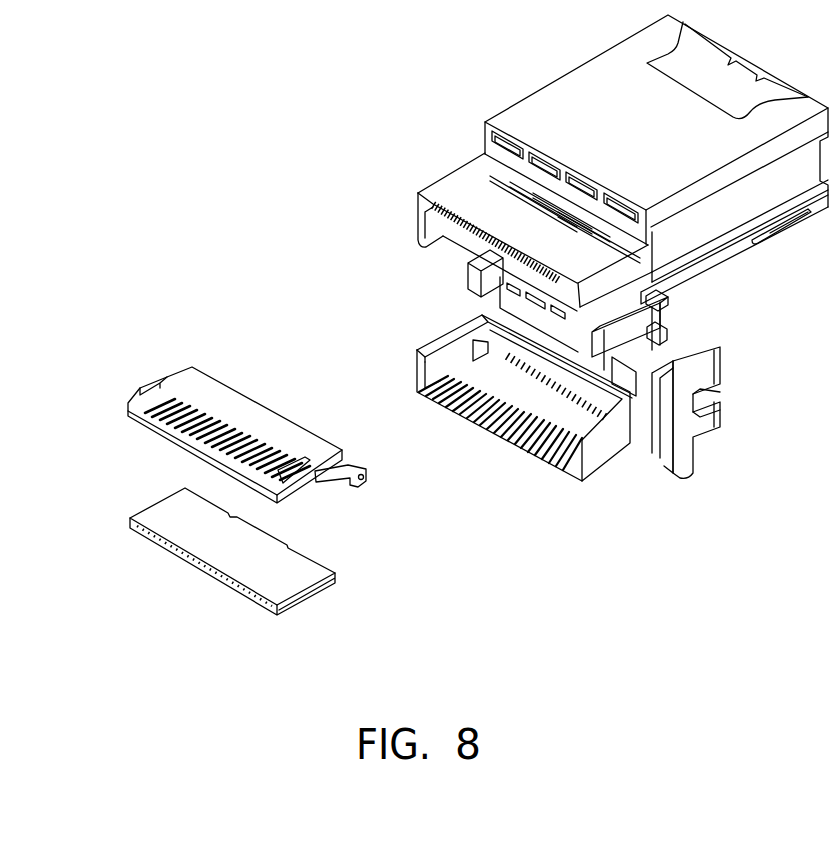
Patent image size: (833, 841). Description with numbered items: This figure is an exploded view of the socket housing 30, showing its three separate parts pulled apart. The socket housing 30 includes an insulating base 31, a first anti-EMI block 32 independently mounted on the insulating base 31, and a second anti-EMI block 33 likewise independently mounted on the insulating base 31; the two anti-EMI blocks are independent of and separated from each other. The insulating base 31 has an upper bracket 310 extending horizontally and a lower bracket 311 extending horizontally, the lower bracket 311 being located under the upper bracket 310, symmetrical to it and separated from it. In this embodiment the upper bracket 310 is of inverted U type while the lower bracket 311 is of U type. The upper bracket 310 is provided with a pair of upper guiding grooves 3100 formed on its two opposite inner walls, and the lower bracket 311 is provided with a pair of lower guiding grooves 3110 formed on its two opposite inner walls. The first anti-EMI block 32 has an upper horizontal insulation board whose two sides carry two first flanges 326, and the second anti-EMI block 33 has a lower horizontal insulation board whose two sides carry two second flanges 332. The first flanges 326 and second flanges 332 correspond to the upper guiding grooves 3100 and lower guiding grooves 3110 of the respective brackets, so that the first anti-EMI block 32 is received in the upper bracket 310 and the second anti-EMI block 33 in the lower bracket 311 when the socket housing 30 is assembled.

The socket housing 30 is at (244, 101).
The insulating base 31 is at (565, 74).
The upper bracket 310 is at (458, 188).
The upper guiding grooves 3100 is at (420, 237).
The lower bracket 311 is at (430, 337).
The lower guiding grooves 3110 is at (418, 359).
The first anti-EMI block 32 is at (177, 366).
The first flanges 326 is at (131, 400).
The second anti-EMI block 33 is at (144, 504).
The second flanges 332 is at (130, 523).